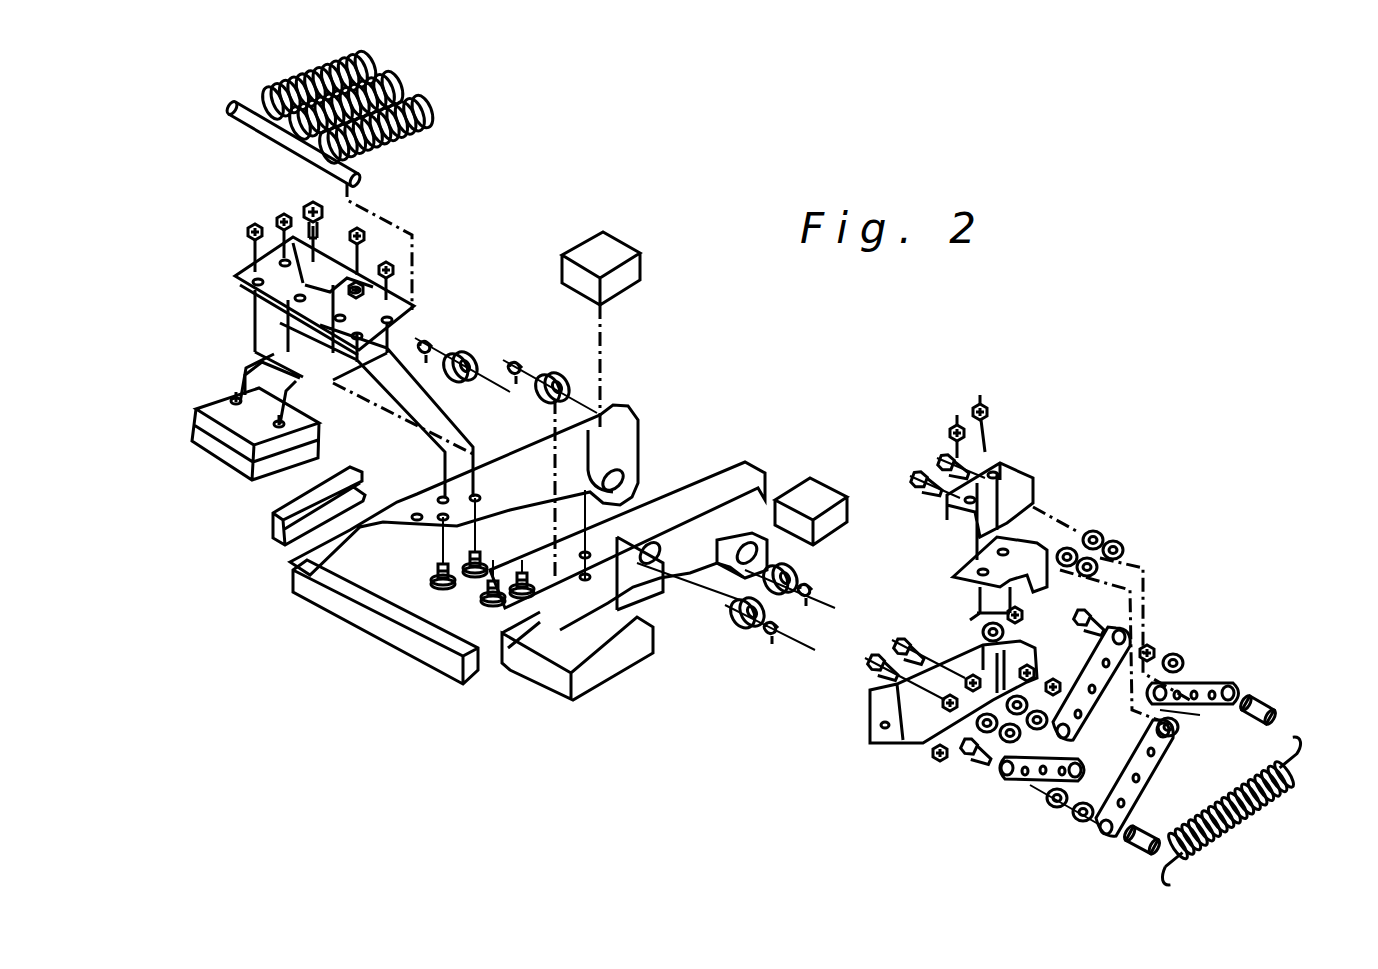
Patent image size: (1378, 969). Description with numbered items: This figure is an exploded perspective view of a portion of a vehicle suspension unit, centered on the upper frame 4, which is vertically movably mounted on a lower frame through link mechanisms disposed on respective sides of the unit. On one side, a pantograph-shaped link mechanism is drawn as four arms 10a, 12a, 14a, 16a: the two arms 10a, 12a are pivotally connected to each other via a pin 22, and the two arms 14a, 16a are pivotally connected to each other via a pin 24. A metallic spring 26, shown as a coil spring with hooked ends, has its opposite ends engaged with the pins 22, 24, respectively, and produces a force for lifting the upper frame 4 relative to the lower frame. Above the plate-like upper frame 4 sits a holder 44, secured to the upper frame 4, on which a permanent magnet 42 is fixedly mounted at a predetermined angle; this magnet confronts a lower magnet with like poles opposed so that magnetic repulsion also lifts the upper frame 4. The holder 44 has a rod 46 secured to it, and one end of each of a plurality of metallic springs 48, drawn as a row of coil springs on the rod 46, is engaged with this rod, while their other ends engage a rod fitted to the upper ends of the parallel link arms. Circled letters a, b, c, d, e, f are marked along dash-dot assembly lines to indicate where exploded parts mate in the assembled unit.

The upper frame 4 is at (715, 417).
The arm 10a is at (1213, 680).
The arm 12a is at (1133, 632).
The arm 14a is at (1100, 833).
The arm 16a is at (1000, 783).
The pin 22 is at (1257, 693).
The pin 24 is at (1132, 853).
The metallic spring 26 is at (1250, 817).
The permanent magnet 42 is at (219, 467).
The holder 44 is at (240, 287).
The rod 46 is at (242, 123).
The metallic springs 48 is at (434, 96).
The position a is at (719, 540).
The position b is at (1035, 667).
The position c is at (872, 706).
The position d is at (670, 555).
The position e is at (616, 510).
The position f is at (537, 470).